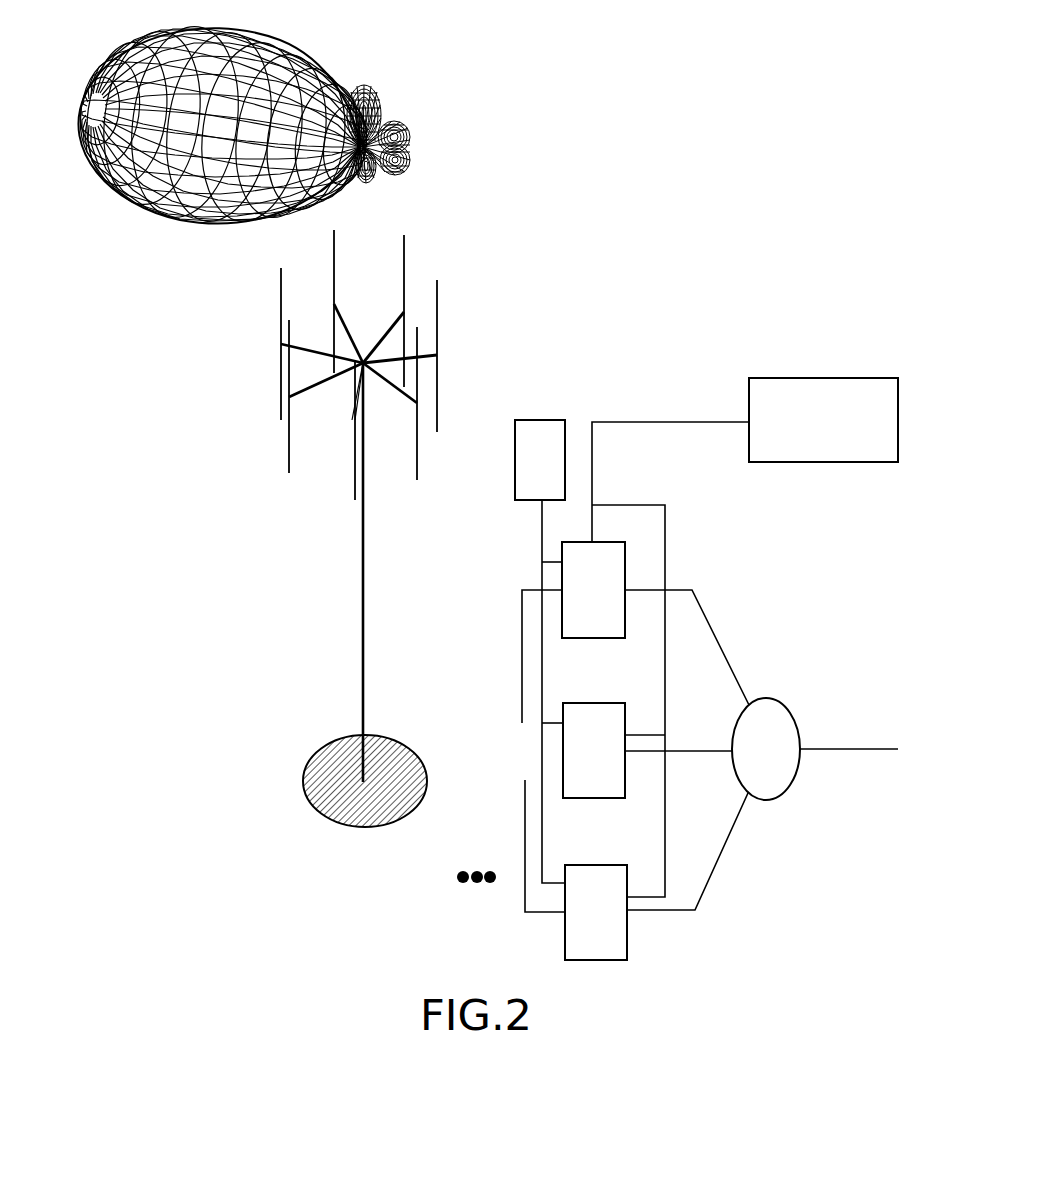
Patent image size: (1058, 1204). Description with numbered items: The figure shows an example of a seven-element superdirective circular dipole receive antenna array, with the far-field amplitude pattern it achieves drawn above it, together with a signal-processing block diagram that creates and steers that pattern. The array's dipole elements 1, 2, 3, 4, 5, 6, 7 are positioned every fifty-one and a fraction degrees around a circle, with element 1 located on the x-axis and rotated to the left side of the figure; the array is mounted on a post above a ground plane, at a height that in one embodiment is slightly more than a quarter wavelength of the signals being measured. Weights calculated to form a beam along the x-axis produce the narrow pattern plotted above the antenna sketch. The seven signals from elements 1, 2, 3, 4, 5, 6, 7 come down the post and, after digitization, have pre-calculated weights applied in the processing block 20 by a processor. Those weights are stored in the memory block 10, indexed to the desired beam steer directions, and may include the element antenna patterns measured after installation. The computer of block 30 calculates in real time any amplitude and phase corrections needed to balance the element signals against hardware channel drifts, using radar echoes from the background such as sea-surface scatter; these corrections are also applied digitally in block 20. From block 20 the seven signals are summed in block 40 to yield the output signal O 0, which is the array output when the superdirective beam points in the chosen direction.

The element # 1 is at (390, 497).
The element # 2 is at (437, 488).
The element # 3 is at (397, 552).
The element # 4 is at (455, 815).
The element # 5 is at (433, 843).
The element # 6 is at (402, 857).
The element # 7 is at (370, 860).
The memory block 10 is at (527, 475).
The processing block 20 is at (578, 605).
The computer block 30 is at (808, 435).
The summing block 40 is at (752, 765).
The output signal O 0 is at (860, 751).